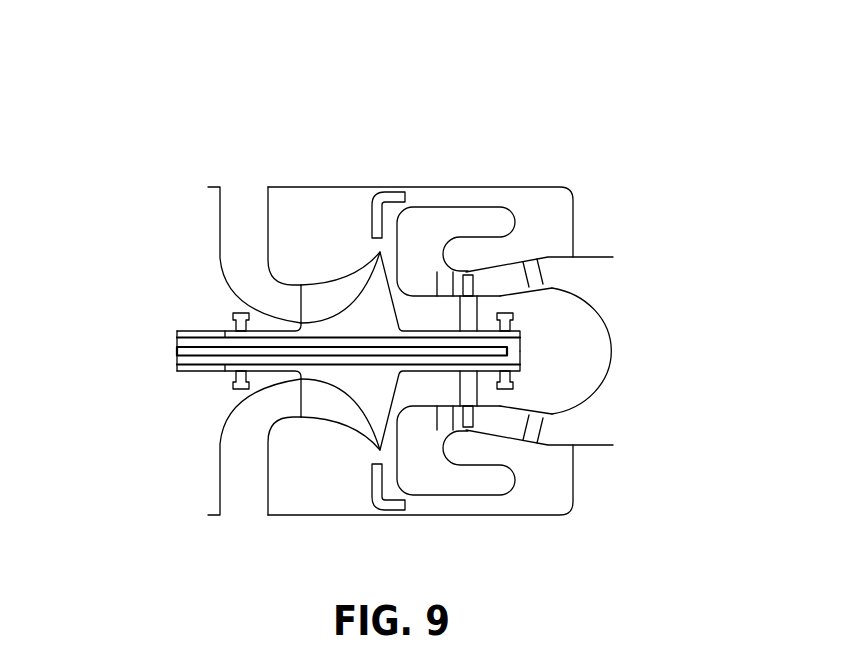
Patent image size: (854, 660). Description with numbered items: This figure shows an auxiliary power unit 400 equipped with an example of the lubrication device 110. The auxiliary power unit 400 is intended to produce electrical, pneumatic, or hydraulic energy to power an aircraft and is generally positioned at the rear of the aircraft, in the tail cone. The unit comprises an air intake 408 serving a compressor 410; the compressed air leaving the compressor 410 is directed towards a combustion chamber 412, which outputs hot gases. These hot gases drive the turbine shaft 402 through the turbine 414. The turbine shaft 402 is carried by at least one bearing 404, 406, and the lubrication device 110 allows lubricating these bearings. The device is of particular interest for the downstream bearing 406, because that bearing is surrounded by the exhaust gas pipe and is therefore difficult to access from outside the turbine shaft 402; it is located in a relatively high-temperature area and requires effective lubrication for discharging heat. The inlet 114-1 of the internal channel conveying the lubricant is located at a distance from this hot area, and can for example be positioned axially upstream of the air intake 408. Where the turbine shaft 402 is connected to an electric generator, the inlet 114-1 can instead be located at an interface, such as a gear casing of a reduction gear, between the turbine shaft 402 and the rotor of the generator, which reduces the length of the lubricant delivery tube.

The auxiliary power unit 400 is at (136, 118).
The air intake 408 is at (247, 186).
The turbine shaft 402 is at (202, 383).
The compressor 410 is at (355, 412).
The combustion chamber 412 is at (502, 486).
The turbine 414 is at (470, 283).
The bearing 404 is at (230, 315).
The downstream bearing 406 is at (515, 320).
The lubrication device 110 is at (167, 342).
The inlet of internal channel 114-1 is at (173, 353).